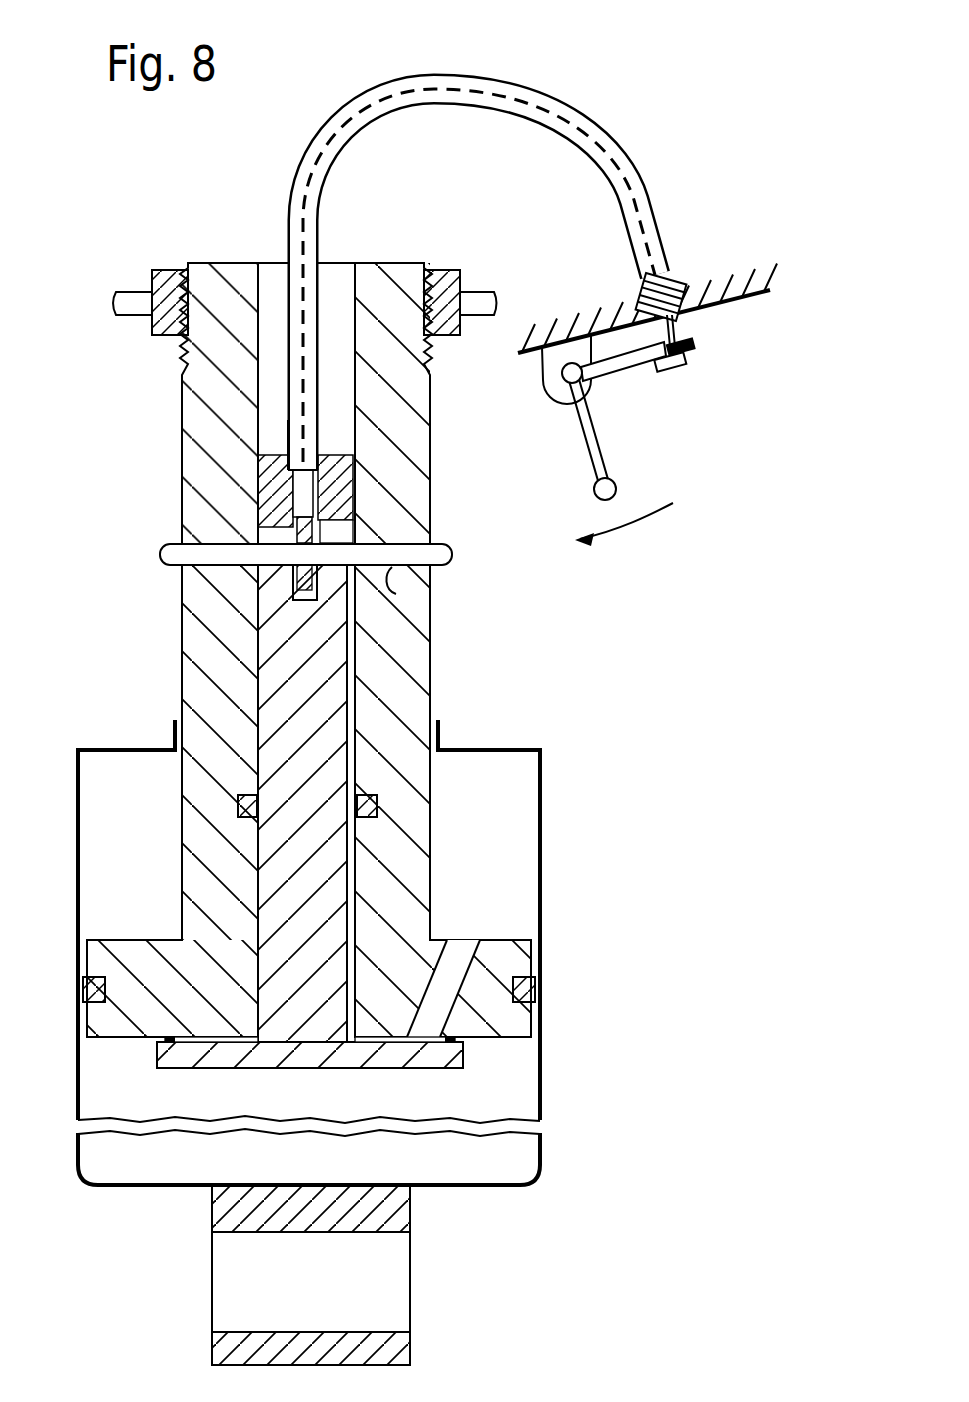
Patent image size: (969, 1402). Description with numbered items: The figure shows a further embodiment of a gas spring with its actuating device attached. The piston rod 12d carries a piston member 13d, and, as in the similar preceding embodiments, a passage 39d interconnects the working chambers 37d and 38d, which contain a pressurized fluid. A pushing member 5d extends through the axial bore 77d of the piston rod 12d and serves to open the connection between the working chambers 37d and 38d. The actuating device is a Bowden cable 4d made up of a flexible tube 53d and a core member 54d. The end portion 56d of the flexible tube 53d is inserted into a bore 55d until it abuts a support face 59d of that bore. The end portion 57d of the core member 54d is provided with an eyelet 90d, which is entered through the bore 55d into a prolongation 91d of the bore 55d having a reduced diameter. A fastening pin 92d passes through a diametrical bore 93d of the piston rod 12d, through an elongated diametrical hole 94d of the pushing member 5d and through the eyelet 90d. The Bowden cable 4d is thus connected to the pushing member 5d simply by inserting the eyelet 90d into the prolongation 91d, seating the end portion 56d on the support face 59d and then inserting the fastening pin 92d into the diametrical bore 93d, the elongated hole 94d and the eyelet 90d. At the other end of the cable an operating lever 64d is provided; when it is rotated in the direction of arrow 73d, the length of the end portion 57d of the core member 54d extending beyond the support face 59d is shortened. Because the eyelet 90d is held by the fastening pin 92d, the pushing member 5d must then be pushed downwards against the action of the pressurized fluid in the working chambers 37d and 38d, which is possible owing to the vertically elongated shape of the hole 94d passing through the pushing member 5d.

The Bowden cable 4d is at (642, 143).
The pushing member 5d is at (325, 712).
The piston rod 12d is at (415, 662).
The piston member 13d is at (507, 1025).
The working chamber 37d is at (507, 1087).
The working chamber 38d is at (507, 842).
The passage 39d is at (490, 953).
The flexible tube 53d is at (487, 112).
The core member 54d is at (522, 92).
The bore 55d is at (323, 463).
The end portion of the flexible tube 56d is at (288, 437).
The end portion of the core member 57d is at (300, 500).
The support face 59d is at (290, 475).
The operating lever 64d is at (597, 427).
The arrow 73d is at (638, 525).
The axial bore 77d is at (252, 692).
The eyelet 90d is at (293, 590).
The prolongation of the bore 91d is at (310, 497).
The fastening pin 92d is at (163, 552).
The diametrical bore 93d is at (390, 593).
The elongated diametrical hole 94d is at (337, 537).